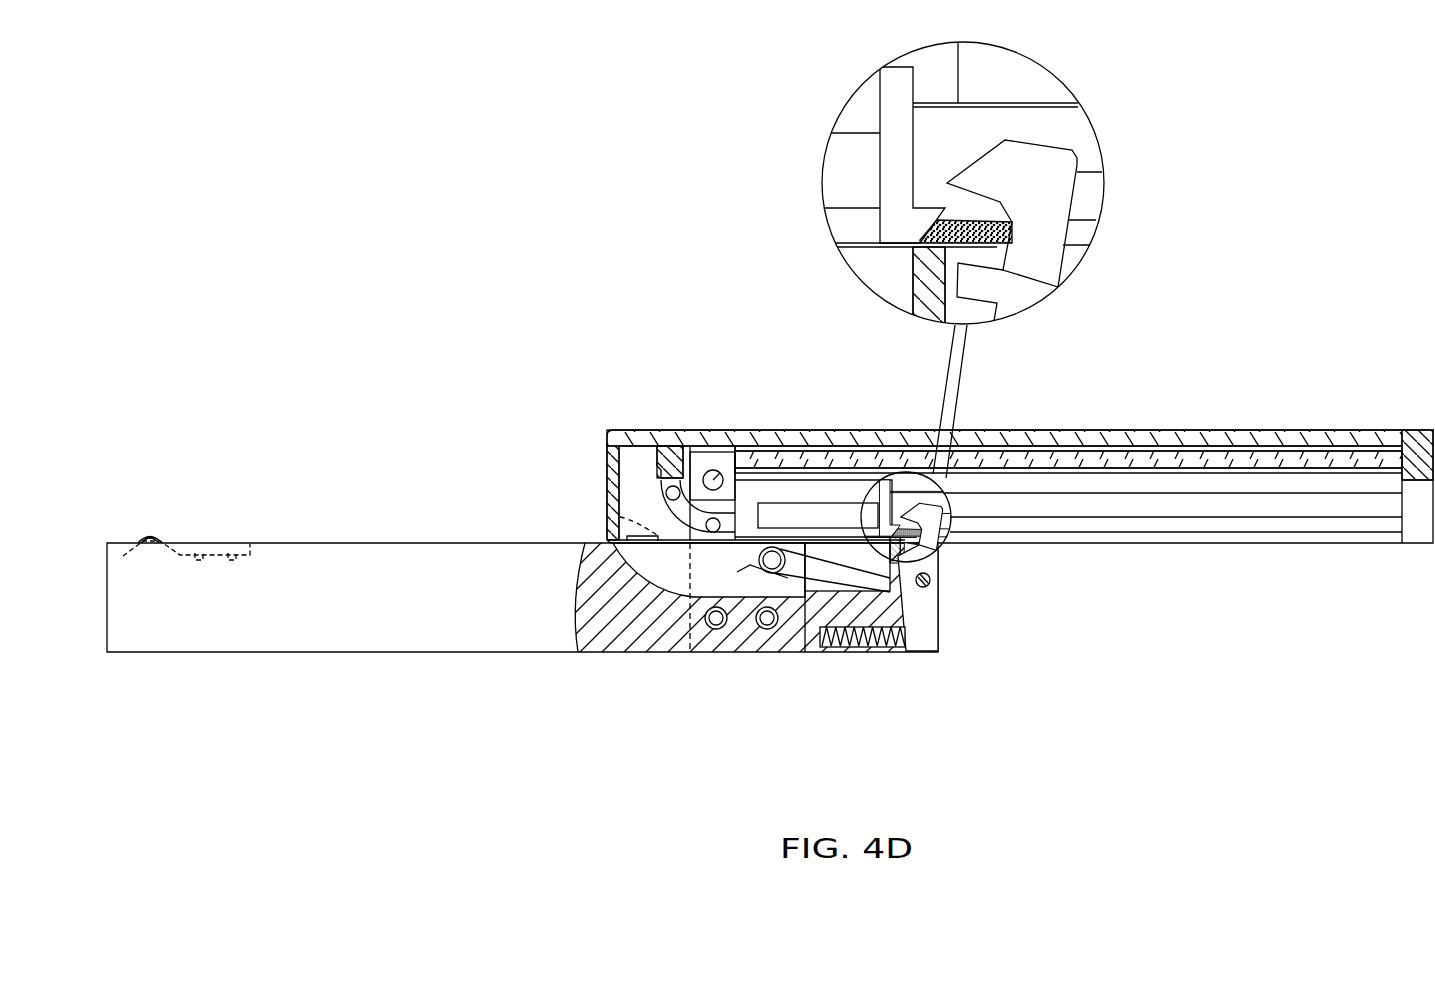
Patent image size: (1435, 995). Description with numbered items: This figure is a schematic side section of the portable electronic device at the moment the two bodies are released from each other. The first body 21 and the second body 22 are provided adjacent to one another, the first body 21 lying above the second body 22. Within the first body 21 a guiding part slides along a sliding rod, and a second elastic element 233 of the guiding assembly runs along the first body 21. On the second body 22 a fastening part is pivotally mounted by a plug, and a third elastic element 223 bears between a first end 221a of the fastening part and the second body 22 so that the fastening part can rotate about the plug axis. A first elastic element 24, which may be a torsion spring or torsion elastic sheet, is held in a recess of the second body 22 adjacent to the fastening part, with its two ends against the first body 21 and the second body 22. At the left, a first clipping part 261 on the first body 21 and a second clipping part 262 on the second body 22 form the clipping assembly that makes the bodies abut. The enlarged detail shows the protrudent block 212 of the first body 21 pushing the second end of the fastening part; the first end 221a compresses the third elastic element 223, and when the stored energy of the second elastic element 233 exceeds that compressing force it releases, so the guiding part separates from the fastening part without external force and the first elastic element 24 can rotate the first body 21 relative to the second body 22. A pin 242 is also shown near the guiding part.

The first body 21 is at (1298, 430).
The second body 22 is at (386, 626).
The first elastic element 24 is at (737, 572).
The protrudent block 212 is at (1008, 236).
The first end 221a is at (922, 641).
The third elastic element 223 is at (888, 652).
The second elastic element 233 is at (1080, 452).
The pin 242 is at (713, 478).
The first clipping part 261 is at (607, 508).
The second clipping part 262 is at (151, 538).